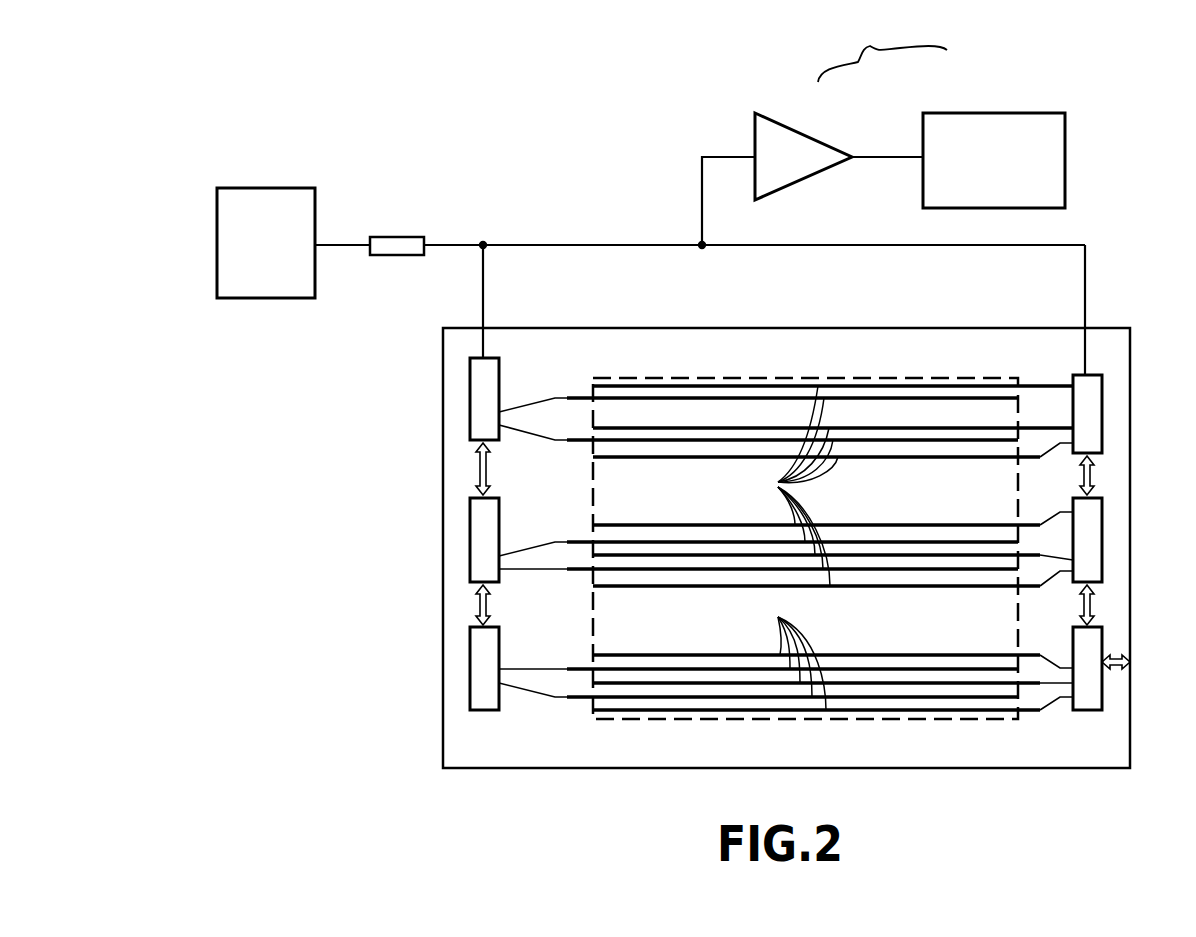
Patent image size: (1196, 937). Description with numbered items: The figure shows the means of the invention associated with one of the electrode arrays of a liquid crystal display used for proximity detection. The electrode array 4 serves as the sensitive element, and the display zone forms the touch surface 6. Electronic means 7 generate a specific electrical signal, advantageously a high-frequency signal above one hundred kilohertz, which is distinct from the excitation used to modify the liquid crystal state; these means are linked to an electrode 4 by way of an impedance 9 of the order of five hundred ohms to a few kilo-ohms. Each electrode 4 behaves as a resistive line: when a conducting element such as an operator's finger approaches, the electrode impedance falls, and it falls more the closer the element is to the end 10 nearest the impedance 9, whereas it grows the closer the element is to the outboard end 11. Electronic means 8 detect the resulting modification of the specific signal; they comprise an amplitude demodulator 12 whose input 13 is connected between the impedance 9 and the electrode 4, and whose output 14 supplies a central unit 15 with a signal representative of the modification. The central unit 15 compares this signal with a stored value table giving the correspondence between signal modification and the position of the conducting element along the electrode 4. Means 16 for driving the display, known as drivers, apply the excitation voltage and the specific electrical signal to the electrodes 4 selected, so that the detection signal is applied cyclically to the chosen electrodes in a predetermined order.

The electrode array 4 is at (796, 548).
The touch surface 6 is at (855, 378).
The electronic means for generating a specific electrical signal 7 is at (276, 188).
The electronic means for detecting modifications of the electrical signal 8 is at (882, 48).
The impedance 9 is at (396, 237).
The end of the electrode 10 is at (565, 398).
The outboard end 11 is at (596, 386).
The amplitude demodulator 12 is at (815, 140).
The input 13 is at (720, 156).
The output 14 is at (886, 158).
The central unit 15 is at (958, 113).
The means for driving the display 16 is at (470, 410).